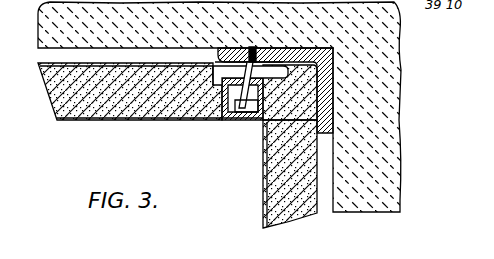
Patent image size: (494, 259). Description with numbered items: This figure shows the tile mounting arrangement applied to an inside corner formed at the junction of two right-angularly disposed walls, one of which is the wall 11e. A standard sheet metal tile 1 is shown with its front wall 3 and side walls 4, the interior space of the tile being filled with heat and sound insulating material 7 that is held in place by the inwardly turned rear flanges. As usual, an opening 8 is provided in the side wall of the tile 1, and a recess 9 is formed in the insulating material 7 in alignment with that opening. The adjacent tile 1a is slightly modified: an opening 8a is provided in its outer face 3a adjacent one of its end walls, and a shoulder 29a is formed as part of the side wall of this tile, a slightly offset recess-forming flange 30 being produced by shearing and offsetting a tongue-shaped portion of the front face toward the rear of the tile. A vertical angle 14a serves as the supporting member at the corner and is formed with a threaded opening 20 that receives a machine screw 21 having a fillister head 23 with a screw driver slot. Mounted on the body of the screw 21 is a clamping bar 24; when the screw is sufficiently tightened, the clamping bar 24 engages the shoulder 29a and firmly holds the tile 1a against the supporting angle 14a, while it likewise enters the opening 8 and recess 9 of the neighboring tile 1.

The tile 1 is at (118, 130).
The modified tile 1a is at (252, 190).
The front wall 3 is at (58, 128).
The outer face 3a is at (263, 219).
The side walls 4 is at (210, 124).
The insulating material 7 is at (62, 90).
The opening 8 is at (240, 86).
The opening 8a is at (330, 93).
The recess 9 is at (210, 68).
The wall 11e is at (404, 118).
The vertical angle 14a is at (350, 55).
The threaded opening 20 is at (242, 46).
The screw 21 is at (252, 46).
The head 23 is at (230, 104).
The clamping bar 24 is at (220, 50).
The shoulder 29a is at (283, 60).
The filler 30 is at (290, 96).